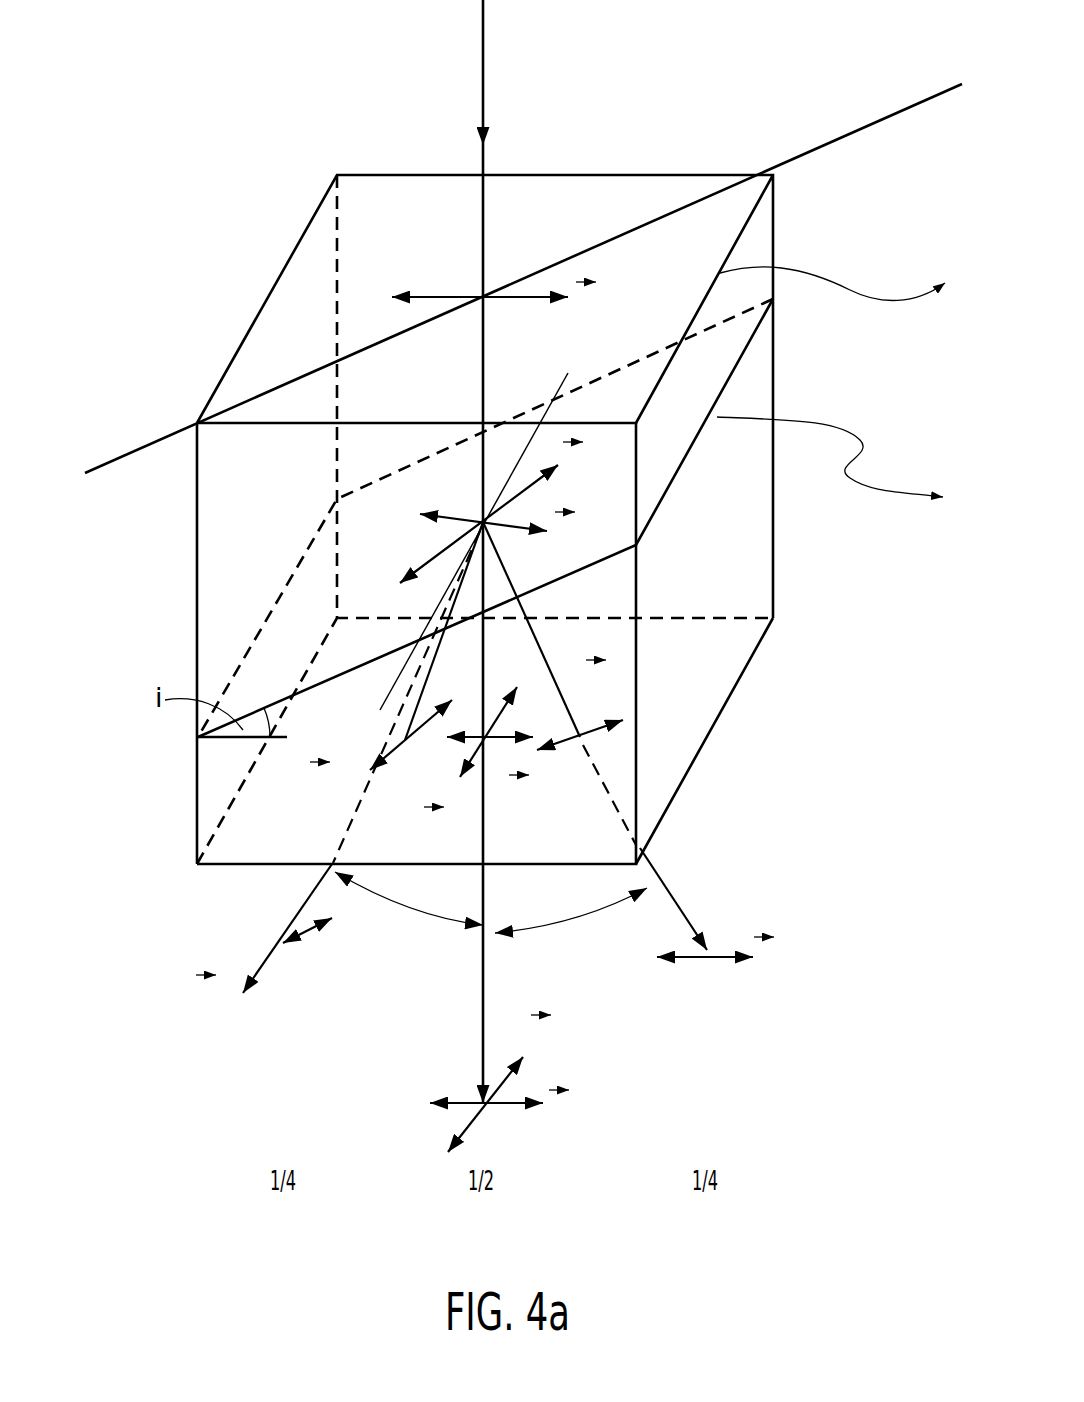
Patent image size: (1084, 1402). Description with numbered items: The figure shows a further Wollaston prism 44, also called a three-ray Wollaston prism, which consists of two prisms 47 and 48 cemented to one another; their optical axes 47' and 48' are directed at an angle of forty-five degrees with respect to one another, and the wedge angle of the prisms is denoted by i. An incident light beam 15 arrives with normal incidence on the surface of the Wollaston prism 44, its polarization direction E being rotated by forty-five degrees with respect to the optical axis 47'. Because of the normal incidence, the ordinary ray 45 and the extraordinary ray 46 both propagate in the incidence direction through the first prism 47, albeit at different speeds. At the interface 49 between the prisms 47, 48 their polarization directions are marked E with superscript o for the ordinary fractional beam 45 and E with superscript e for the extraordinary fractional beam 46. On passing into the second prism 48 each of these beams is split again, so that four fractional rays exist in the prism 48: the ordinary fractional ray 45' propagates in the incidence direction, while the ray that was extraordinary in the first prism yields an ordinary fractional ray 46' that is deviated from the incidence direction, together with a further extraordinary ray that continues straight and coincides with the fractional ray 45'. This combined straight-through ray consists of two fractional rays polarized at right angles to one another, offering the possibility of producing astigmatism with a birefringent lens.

The incident light beam 15 is at (483, 158).
The Wollaston prism 44 is at (298, 242).
The ordinary ray 45 is at (388, 487).
The extraordinary ray 46 is at (485, 518).
The first prism 47 is at (163, 580).
The optical axis of first prism 47' is at (523, 278).
The second prism 48 is at (168, 800).
The optical axis of second prism 48' is at (445, 518).
The interface 49 is at (718, 355).
The ordinary fractional ray 46' is at (644, 901).
The ordinary fractional ray 45' is at (448, 1008).